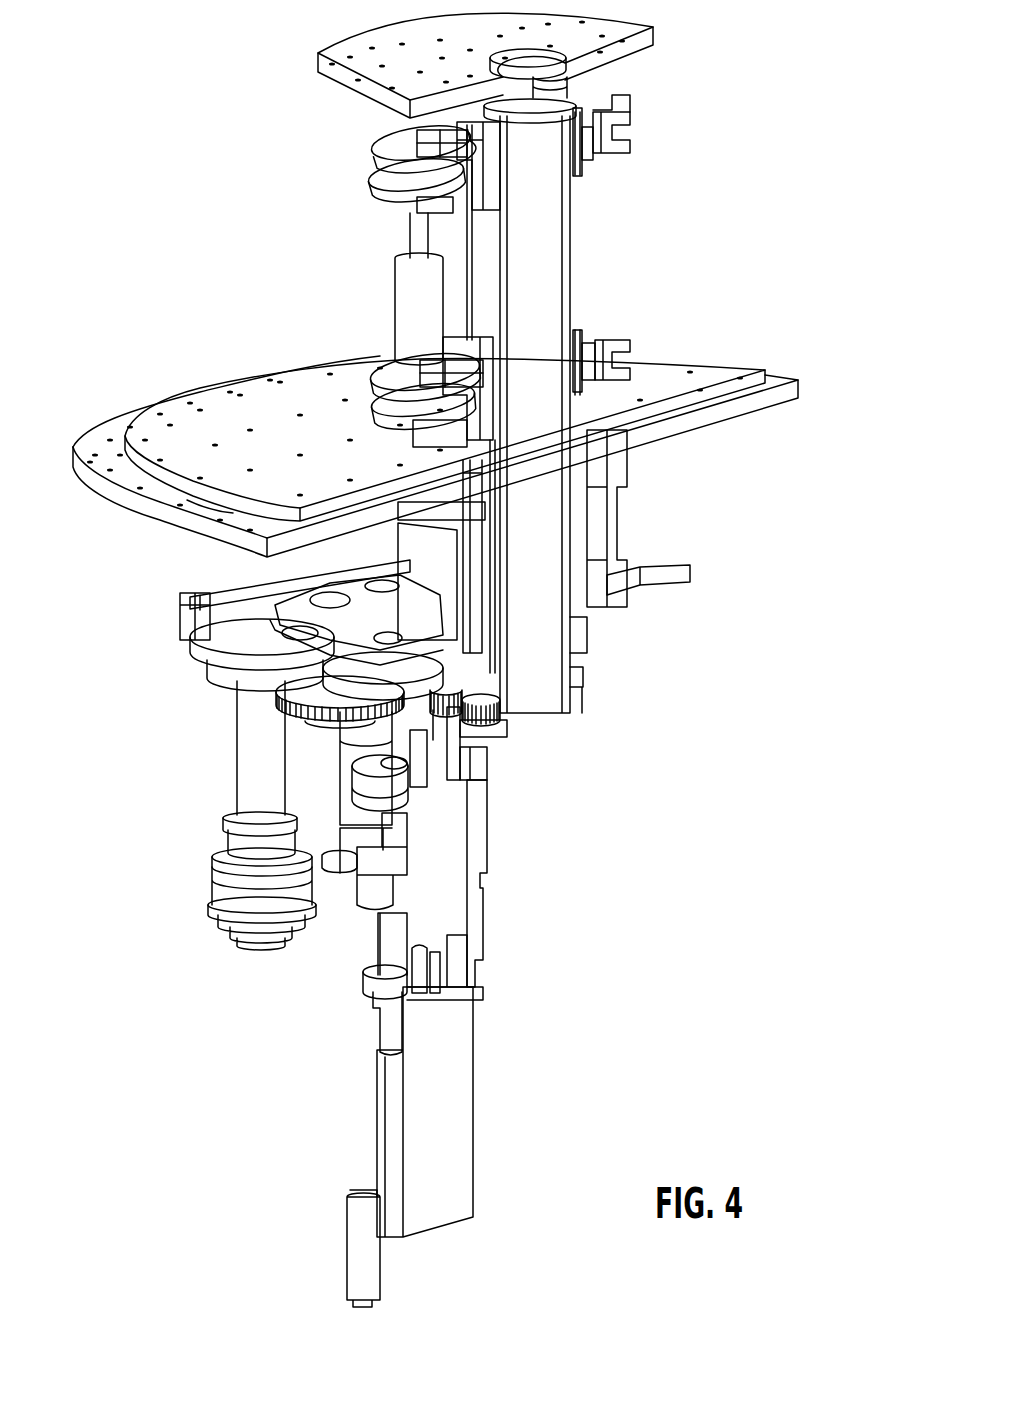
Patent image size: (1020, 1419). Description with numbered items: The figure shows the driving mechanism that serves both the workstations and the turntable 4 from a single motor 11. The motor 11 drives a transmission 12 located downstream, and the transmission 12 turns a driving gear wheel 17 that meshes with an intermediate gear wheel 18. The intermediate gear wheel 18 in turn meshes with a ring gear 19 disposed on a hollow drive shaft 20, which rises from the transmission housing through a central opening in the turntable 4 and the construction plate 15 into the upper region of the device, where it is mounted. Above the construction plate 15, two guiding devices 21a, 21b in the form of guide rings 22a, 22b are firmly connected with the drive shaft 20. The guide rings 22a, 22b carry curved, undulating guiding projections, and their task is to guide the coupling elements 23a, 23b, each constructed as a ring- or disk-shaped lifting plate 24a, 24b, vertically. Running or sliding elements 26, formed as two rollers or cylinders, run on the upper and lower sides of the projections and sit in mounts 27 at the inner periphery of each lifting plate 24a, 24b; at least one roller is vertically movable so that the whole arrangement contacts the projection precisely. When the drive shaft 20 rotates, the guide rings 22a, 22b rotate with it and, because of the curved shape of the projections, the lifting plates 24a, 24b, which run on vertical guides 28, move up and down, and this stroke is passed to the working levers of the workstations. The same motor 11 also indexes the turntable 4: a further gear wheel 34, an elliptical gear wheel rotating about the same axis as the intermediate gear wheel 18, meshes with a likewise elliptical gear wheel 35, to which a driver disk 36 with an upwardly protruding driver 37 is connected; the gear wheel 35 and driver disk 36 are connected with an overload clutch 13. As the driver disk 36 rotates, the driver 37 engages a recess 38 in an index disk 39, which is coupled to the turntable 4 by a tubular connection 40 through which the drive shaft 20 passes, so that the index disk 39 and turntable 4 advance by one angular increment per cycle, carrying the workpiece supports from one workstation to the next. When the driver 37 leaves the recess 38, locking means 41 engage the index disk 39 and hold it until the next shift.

The turntable 4 is at (760, 403).
The motor 11 is at (455, 1098).
The transmission 12 is at (470, 863).
The overload clutch 13 is at (213, 863).
The construction plate 15 is at (722, 368).
The driving gear wheel 17 is at (387, 727).
The intermediate gear wheel 18 is at (313, 720).
The ring gear 19 is at (505, 713).
The hollow drive shaft 20 is at (568, 590).
The guiding device 21a is at (601, 167).
The guiding device 21b is at (609, 345).
The guide ring 22a is at (578, 155).
The guide ring 22b is at (586, 347).
The coupling element 23a is at (646, 120).
The coupling element 23b is at (382, 347).
The lifting plate 24a is at (598, 117).
The lifting plate 24b is at (375, 372).
The running or sliding elements 26 is at (495, 194).
The mounts 27 is at (380, 132).
The vertical guides 28 is at (415, 227).
The further gear wheel 34 is at (283, 688).
The gear wheel 35 is at (223, 675).
The driver disk 36 is at (197, 647).
The driver 37 is at (180, 612).
The recess 38 is at (350, 582).
The index disk 39 is at (407, 640).
The tubular connection 40 is at (583, 505).
The locking means 41 is at (220, 585).